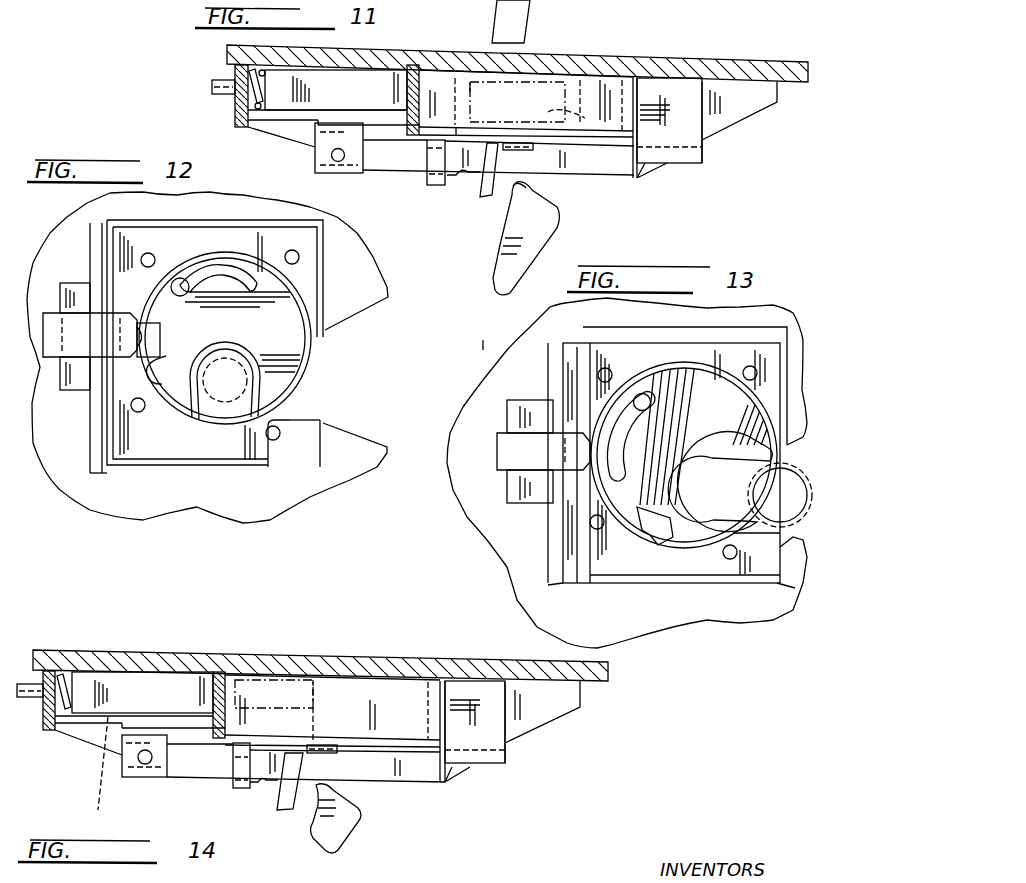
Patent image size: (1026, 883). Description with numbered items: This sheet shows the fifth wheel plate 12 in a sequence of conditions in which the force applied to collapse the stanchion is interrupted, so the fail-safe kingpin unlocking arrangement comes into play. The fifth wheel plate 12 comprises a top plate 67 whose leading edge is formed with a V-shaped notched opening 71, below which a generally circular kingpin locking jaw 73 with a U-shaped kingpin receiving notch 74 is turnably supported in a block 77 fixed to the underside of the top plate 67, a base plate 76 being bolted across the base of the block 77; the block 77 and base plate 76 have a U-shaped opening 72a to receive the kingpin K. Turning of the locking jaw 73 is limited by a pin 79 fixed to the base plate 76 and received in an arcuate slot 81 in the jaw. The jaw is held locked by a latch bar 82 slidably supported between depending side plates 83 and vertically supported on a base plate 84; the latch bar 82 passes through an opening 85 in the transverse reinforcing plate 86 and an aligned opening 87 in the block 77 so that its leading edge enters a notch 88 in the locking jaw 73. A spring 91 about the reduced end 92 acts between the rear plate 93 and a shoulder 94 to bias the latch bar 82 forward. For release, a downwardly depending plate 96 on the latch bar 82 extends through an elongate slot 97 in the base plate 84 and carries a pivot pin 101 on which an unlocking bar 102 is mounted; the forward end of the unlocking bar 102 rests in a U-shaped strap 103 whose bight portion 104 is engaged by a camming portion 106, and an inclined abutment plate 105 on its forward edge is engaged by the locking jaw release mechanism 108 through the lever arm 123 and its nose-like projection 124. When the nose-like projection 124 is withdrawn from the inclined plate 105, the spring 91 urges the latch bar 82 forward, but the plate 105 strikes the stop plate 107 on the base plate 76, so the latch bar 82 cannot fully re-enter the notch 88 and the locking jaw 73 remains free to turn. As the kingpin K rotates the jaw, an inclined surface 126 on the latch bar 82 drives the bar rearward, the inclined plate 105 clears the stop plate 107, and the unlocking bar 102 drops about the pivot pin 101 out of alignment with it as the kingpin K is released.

In FIG. 11, the fifth wheel plate 12 is at (602, 54).
In FIG. 14, the fifth wheel plate 12 is at (420, 656).
In FIG. 11, the top plate 67 is at (469, 48).
In FIG. 12, the top plate 67 is at (358, 279).
In FIG. 13, the top plate 67 is at (490, 367).
In FIG. 14, the top plate 67 is at (326, 656).
In FIG. 12, the V-shaped notched opening 71 is at (336, 437).
In FIG. 13, the V-shaped notched opening 71 is at (775, 592).
In FIG. 12, the U-shaped opening 72a is at (303, 413).
In FIG. 13, the U-shaped opening 72a is at (720, 482).
In FIG. 12, the kingpin locking jaw 73 is at (290, 347).
In FIG. 13, the kingpin locking jaw 73 is at (690, 530).
In FIG. 12, the kingpin receiving notch 74 is at (257, 385).
In FIG. 13, the kingpin receiving notch 74 is at (774, 450).
In FIG. 11, the base plate 76 is at (628, 135).
In FIG. 14, the base plate 76 is at (420, 742).
In FIG. 11, the block 77 is at (627, 90).
In FIG. 12, the block 77 is at (198, 458).
In FIG. 13, the block 77 is at (622, 567).
In FIG. 14, the block 77 is at (378, 688).
In FIG. 12, the pin 79 is at (178, 279).
In FIG. 13, the pin 79 is at (642, 393).
In FIG. 12, the arcuate slot 81 is at (218, 268).
In FIG. 13, the arcuate slot 81 is at (627, 438).
In FIG. 11, the latch bar 82 is at (363, 90).
In FIG. 12, the latch bar 82 is at (60, 320).
In FIG. 13, the latch bar 82 is at (515, 452).
In FIG. 14, the latch bar 82 is at (150, 684).
In FIG. 12, the side plates 83 is at (95, 347).
In FIG. 13, the side plates 83 is at (512, 418).
In FIG. 11, the base plate 84 is at (266, 133).
In FIG. 14, the base plate 84 is at (87, 728).
In FIG. 12, the opening 85 is at (90, 350).
In FIG. 13, the opening 85 is at (530, 406).
In FIG. 11, the reinforcing plate 86 is at (409, 93).
In FIG. 12, the reinforcing plate 86 is at (90, 470).
In FIG. 13, the reinforcing plate 86 is at (555, 547).
In FIG. 14, the reinforcing plate 86 is at (215, 700).
In FIG. 12, the opening 87 is at (127, 407).
In FIG. 13, the opening 87 is at (661, 465).
In FIG. 12, the notch 88 is at (163, 380).
In FIG. 13, the notch 88 is at (668, 522).
In FIG. 11, the spring 91 is at (250, 104).
In FIG. 14, the spring 91 is at (62, 712).
In FIG. 11, the reduced end 92 is at (216, 86).
In FIG. 14, the reduced end 92 is at (25, 684).
In FIG. 11, the rear plate 93 is at (242, 100).
In FIG. 14, the rear plate 93 is at (44, 714).
In FIG. 11, the shoulder 94 is at (262, 76).
In FIG. 11, the downwardly depending plate 96 is at (322, 164).
In FIG. 14, the downwardly depending plate 96 is at (162, 777).
In FIG. 14, the elongate slot 97 is at (97, 772).
In FIG. 11, the pivot pin 101 is at (338, 162).
In FIG. 14, the pivot pin 101 is at (143, 764).
In FIG. 11, the unlocking bar 102 is at (378, 165).
In FIG. 14, the unlocking bar 102 is at (176, 779).
In FIG. 11, the U-shaped strap 103 is at (436, 156).
In FIG. 14, the U-shaped strap 103 is at (238, 768).
In FIG. 11, the bight portion 104 is at (435, 187).
In FIG. 14, the bight portion 104 is at (240, 790).
In FIG. 11, the inclined abutment plate 105 is at (486, 197).
In FIG. 14, the inclined abutment plate 105 is at (303, 760).
In FIG. 11, the camming portion 106 is at (462, 177).
In FIG. 14, the camming portion 106 is at (265, 784).
In FIG. 11, the stop plate 107 is at (527, 151).
In FIG. 14, the stop plate 107 is at (323, 745).
In FIG. 11, the locking jaw release mechanism 108 is at (538, 18).
In FIG. 11, the lever arm 123 is at (540, 236).
In FIG. 14, the lever arm 123 is at (345, 833).
In FIG. 11, the nose-like projection 124 is at (520, 184).
In FIG. 14, the nose-like projection 124 is at (330, 791).
In FIG. 12, the inclined surface 126 is at (140, 318).
In FIG. 11, the kingpin K is at (613, 124).
In FIG. 12, the kingpin K is at (312, 366).
In FIG. 13, the kingpin K is at (777, 507).